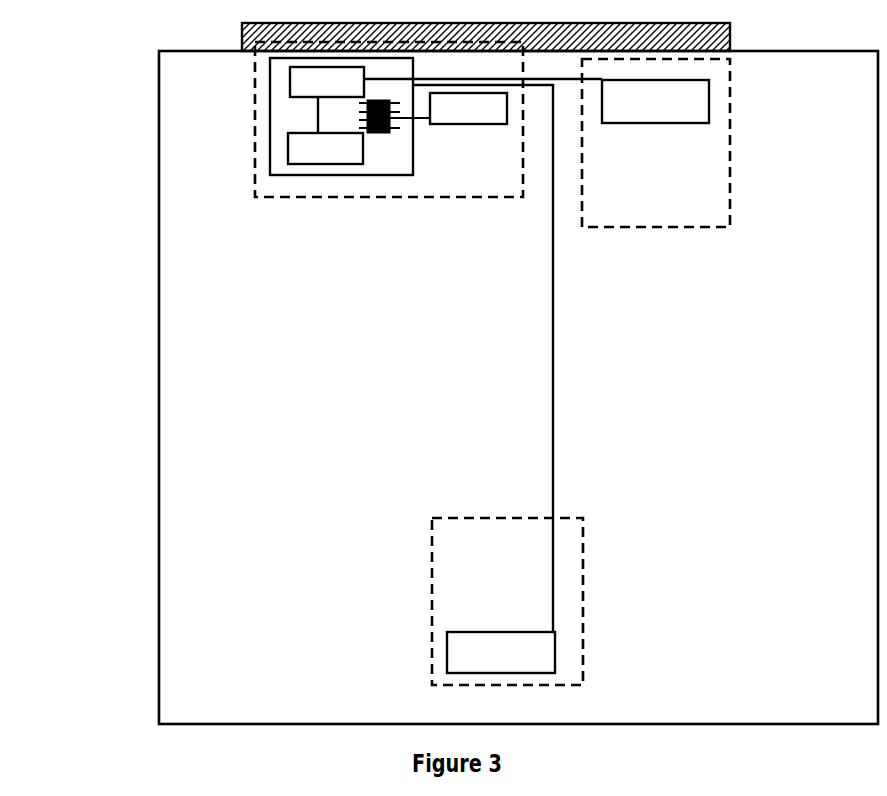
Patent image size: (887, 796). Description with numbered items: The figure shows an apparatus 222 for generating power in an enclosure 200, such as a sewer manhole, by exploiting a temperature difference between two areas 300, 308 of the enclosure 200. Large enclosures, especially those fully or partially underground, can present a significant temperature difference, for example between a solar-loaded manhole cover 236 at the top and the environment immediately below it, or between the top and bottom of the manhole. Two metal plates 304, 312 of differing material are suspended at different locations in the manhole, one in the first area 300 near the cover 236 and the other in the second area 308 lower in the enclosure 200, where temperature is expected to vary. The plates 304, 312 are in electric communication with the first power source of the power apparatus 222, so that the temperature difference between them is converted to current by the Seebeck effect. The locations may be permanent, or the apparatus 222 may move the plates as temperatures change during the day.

The enclosure 200 is at (145, 58).
The power apparatus 222 is at (357, 205).
The manhole cover 236 is at (739, 37).
The first area of the enclosure 300 is at (739, 201).
The first metal plate 304 is at (717, 96).
The second area of the enclosure 308 is at (597, 547).
The second metal plate 312 is at (564, 646).